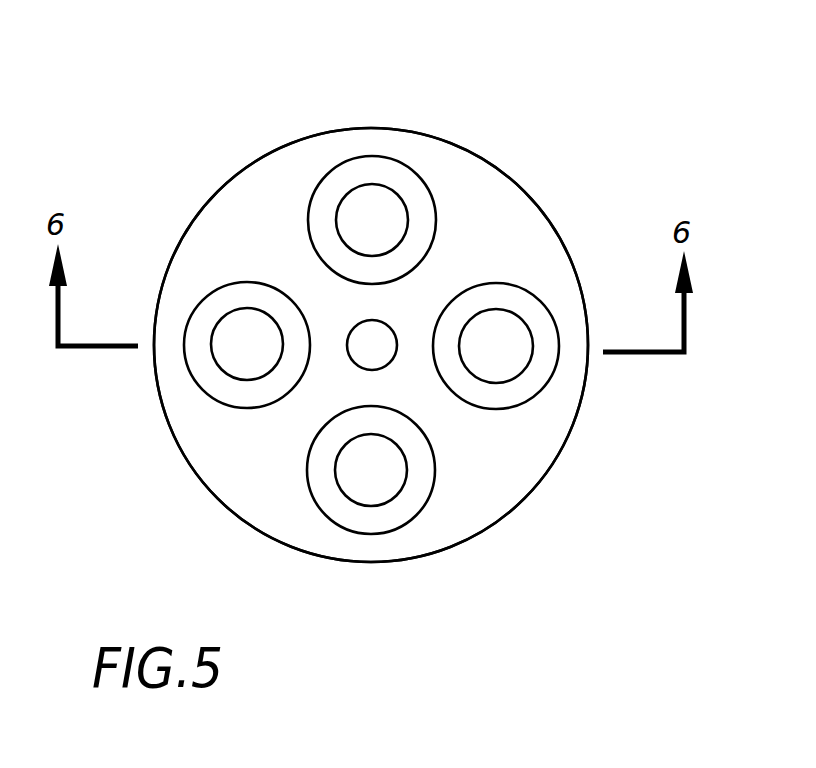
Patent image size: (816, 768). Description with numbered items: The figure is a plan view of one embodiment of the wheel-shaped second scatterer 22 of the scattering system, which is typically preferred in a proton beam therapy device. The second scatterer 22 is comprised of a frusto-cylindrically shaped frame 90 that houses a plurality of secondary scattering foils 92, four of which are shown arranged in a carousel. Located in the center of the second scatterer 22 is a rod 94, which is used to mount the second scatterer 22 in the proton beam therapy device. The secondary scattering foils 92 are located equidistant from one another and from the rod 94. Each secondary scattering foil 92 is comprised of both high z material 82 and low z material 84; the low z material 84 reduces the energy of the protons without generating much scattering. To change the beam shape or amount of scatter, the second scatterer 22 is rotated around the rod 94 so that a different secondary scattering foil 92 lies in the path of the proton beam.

The second scatterer 22 is at (483, 105).
The high z material 82 is at (375, 213).
The low z material 84 is at (492, 395).
The frame 90 is at (552, 277).
The secondary scattering foils 92 is at (292, 490).
The rod 94 is at (363, 340).